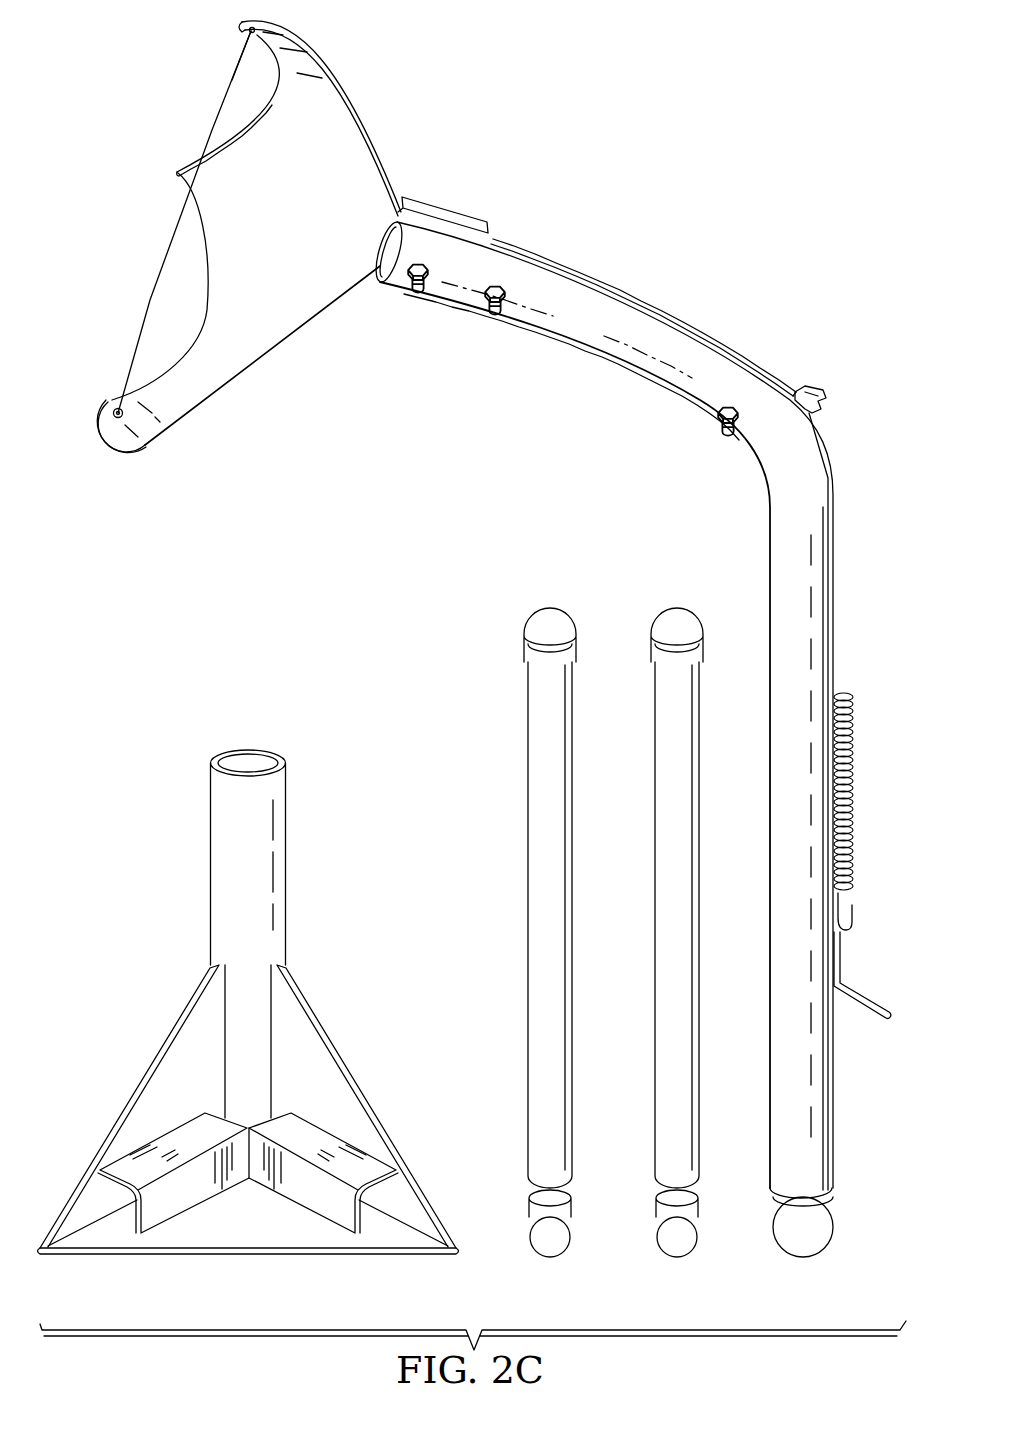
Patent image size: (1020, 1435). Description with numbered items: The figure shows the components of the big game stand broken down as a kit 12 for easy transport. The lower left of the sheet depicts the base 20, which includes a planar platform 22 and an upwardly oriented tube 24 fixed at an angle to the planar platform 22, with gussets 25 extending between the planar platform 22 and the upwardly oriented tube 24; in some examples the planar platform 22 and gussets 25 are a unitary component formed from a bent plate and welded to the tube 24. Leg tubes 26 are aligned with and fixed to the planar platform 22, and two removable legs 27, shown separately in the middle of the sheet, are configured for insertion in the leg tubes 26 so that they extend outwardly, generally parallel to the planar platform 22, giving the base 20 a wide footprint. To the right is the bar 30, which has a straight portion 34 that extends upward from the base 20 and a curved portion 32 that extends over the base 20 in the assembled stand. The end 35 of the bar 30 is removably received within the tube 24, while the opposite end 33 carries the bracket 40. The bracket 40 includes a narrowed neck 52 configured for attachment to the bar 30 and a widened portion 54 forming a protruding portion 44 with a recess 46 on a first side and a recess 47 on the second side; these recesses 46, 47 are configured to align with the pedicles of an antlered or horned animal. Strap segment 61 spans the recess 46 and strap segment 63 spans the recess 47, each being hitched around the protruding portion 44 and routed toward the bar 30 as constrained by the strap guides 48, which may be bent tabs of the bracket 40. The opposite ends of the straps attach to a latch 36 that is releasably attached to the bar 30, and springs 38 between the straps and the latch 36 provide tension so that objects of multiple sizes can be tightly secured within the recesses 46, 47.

The kit 12 is at (712, 142).
The base 20 is at (200, 814).
The planar platform 22 is at (210, 1254).
The upwardly oriented tube 24 is at (290, 880).
The gussets 25 is at (185, 1017).
The leg tubes 26 is at (190, 1120).
The removable legs 27 is at (526, 778).
The bar 30 is at (760, 556).
The curved portion 32 is at (612, 358).
The end 33 is at (386, 243).
The straight portion 34 is at (838, 1098).
The end 35 is at (810, 1243).
The latch 36 is at (858, 1003).
The springs 38 is at (853, 786).
The bracket 40 is at (360, 88).
The protruding portion 44 is at (178, 173).
The recess 46 is at (225, 142).
The recess 47 is at (200, 224).
The strap guides 48 is at (430, 200).
The narrowed neck 52 is at (598, 262).
The widened portion 54 is at (286, 326).
The strap segment 61 is at (240, 63).
The strap segment 63 is at (147, 322).